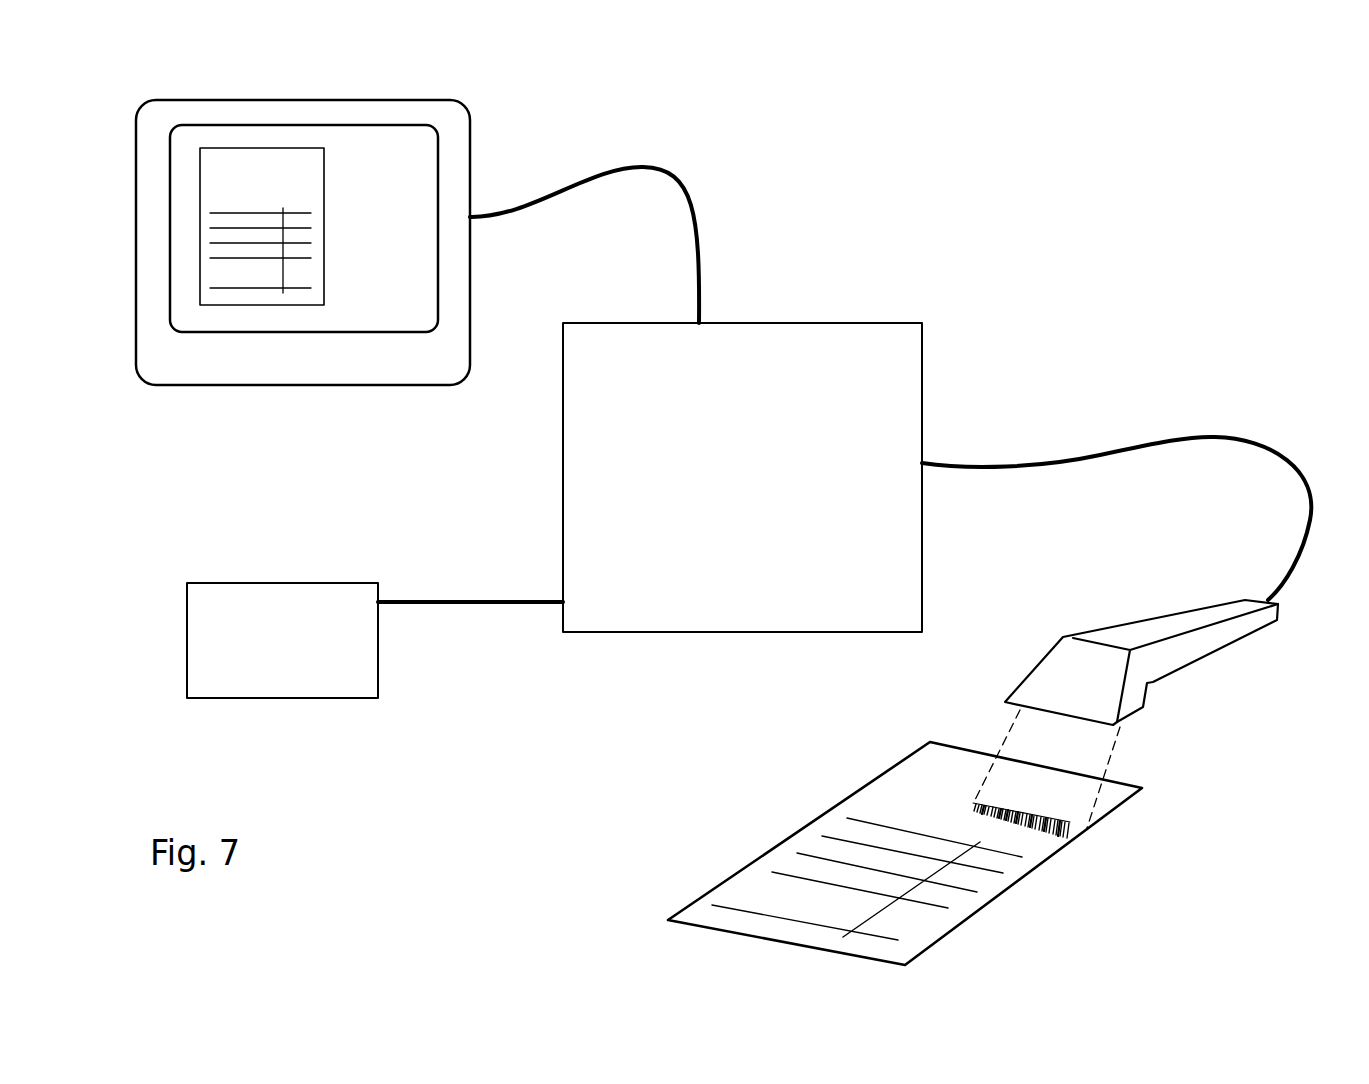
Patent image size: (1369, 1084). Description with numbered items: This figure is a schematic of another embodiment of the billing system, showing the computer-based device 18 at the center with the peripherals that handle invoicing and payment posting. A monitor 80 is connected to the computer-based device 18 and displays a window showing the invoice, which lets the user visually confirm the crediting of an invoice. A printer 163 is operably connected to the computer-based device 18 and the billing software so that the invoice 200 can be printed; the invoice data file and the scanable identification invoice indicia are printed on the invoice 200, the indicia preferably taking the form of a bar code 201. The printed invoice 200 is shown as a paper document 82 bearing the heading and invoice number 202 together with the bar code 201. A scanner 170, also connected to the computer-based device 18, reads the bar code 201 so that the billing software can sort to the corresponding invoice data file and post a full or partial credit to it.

The computer-based device 18 is at (855, 323).
The display monitor 80 is at (267, 385).
The printer 163 is at (375, 640).
The scanner 170 is at (1173, 663).
The paper document 82 is at (992, 908).
The invoice 200 is at (804, 790).
The bar code 201 is at (1065, 822).
The invoice number 202 is at (972, 790).